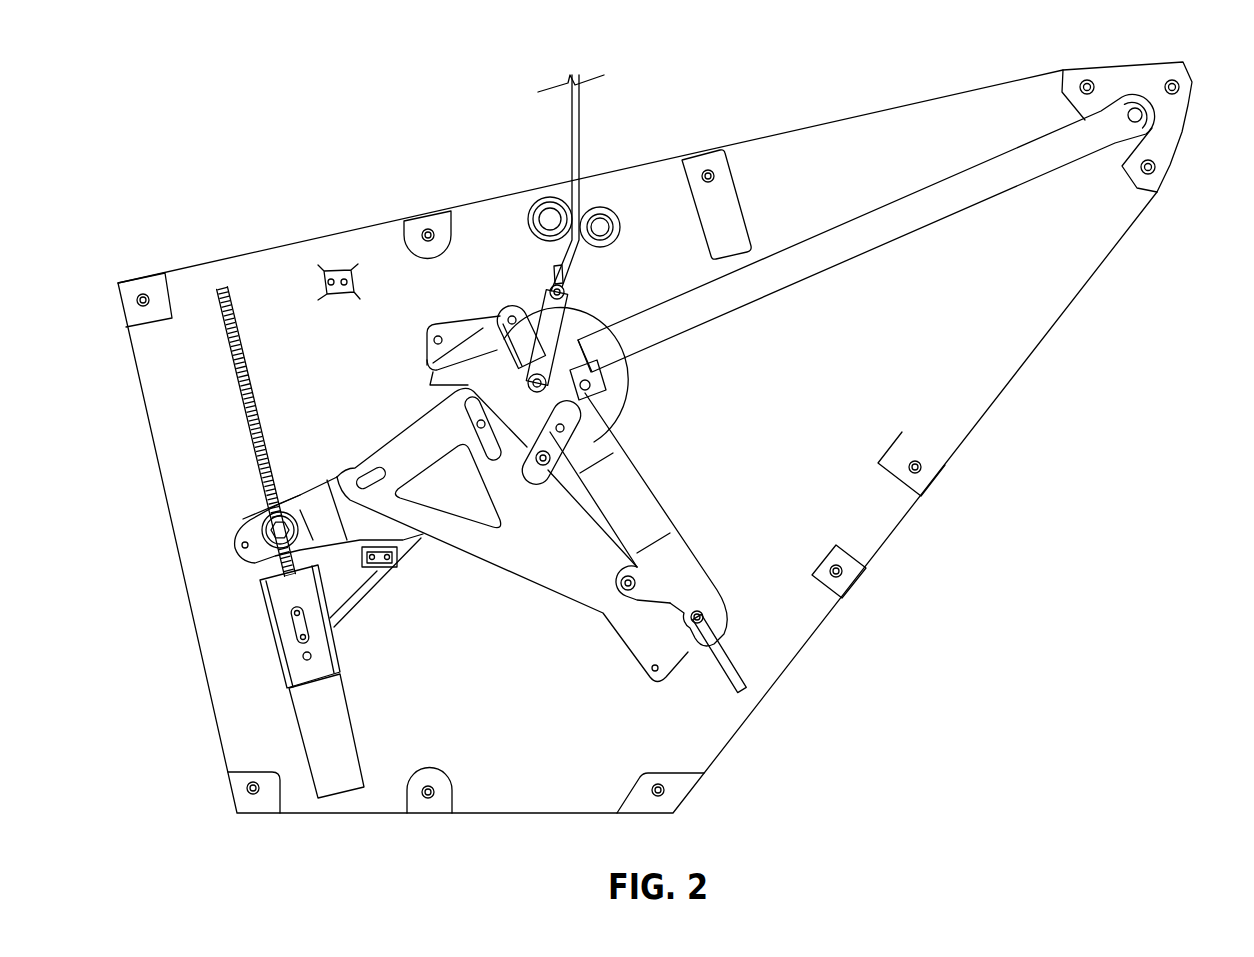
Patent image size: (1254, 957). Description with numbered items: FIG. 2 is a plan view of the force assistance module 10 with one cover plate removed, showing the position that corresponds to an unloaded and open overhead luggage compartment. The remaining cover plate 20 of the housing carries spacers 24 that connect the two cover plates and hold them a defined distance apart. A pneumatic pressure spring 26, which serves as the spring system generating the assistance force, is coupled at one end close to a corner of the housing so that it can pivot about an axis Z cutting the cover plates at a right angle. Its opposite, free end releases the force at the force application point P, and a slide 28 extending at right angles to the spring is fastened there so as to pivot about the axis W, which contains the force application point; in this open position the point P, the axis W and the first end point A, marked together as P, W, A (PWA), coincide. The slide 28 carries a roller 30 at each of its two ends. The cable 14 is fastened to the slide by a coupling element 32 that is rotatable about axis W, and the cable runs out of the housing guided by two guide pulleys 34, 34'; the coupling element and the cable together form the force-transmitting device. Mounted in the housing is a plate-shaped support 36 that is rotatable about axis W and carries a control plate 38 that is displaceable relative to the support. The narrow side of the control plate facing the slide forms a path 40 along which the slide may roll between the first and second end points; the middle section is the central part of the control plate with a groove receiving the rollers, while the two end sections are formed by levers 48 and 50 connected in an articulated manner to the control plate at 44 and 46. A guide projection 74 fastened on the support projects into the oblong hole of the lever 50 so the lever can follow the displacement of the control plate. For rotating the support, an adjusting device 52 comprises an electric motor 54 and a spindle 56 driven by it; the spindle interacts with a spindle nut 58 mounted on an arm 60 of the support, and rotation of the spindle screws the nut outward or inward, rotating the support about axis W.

The force assistance module 10 is at (310, 133).
The cable 14 is at (581, 98).
The cover plate 20 is at (1000, 294).
The spacers 24 is at (143, 284).
The pneumatic pressure spring 26 is at (855, 220).
The slide 28 is at (425, 372).
The roller 30 is at (512, 305).
The coupling element 32 is at (570, 300).
The guide pulley 34 is at (610, 193).
The guide pulley 34' is at (545, 196).
The support 36 is at (650, 529).
The control plate 38 is at (538, 554).
The path 40 is at (605, 503).
The articulated connection of lever 48 44 is at (543, 466).
The articulated connection of lever 50 46 is at (620, 582).
The lever 48 is at (487, 332).
The lever 50 is at (725, 660).
The adjusting device 52 is at (260, 636).
The electric motor 54 is at (345, 732).
The spindle 56 is at (224, 350).
The spindle nut 58 is at (268, 512).
The arm 60 is at (328, 478).
The guide projection 74 is at (690, 630).
The axis Z is at (1142, 115).
The force application point P, axis W and first end point A PWA is at (596, 390).